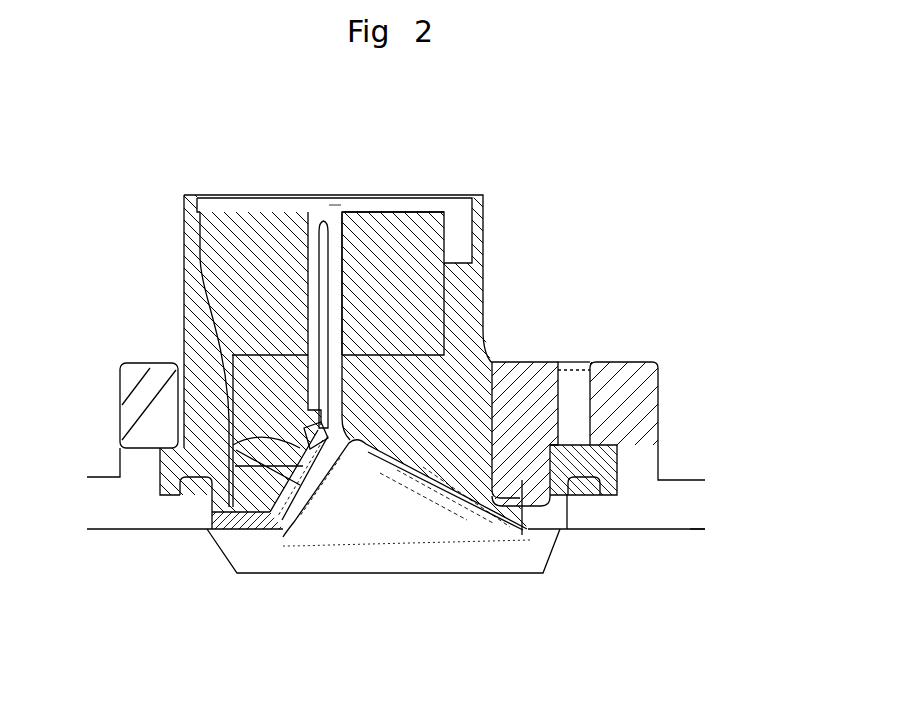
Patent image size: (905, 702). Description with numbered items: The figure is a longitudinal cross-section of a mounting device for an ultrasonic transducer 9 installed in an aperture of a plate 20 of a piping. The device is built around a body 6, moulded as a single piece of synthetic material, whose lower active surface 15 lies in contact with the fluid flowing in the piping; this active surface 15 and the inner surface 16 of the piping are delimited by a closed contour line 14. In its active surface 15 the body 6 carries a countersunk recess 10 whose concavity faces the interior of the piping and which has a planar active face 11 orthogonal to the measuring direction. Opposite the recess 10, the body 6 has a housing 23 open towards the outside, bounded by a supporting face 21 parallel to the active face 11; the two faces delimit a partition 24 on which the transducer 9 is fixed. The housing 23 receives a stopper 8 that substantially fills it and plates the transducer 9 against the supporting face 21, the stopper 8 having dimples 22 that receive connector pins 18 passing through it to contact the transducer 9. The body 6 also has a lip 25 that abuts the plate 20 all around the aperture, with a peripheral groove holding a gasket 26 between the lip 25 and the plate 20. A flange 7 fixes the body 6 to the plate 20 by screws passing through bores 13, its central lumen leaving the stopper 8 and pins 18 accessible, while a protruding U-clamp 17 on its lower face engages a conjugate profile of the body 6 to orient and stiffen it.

The body 6 is at (472, 366).
The flange 7 is at (628, 385).
The stopper 8 is at (228, 252).
The transducer 9 is at (228, 415).
The countersunk recess 10 is at (373, 498).
The active face 11 is at (327, 487).
The bores 13 is at (577, 410).
The contour line 14 is at (308, 573).
The active surface 15 is at (470, 558).
The inner surface of the piping 16 is at (695, 532).
The U-clamp 17 is at (522, 535).
The connector pins 18 is at (328, 303).
The plate 20 is at (602, 512).
The supporting face 21 is at (212, 517).
The dimples 22 is at (318, 232).
The housing 23 is at (343, 206).
The partition 24 is at (313, 470).
The lip 25 is at (613, 443).
The gasket 26 is at (190, 490).